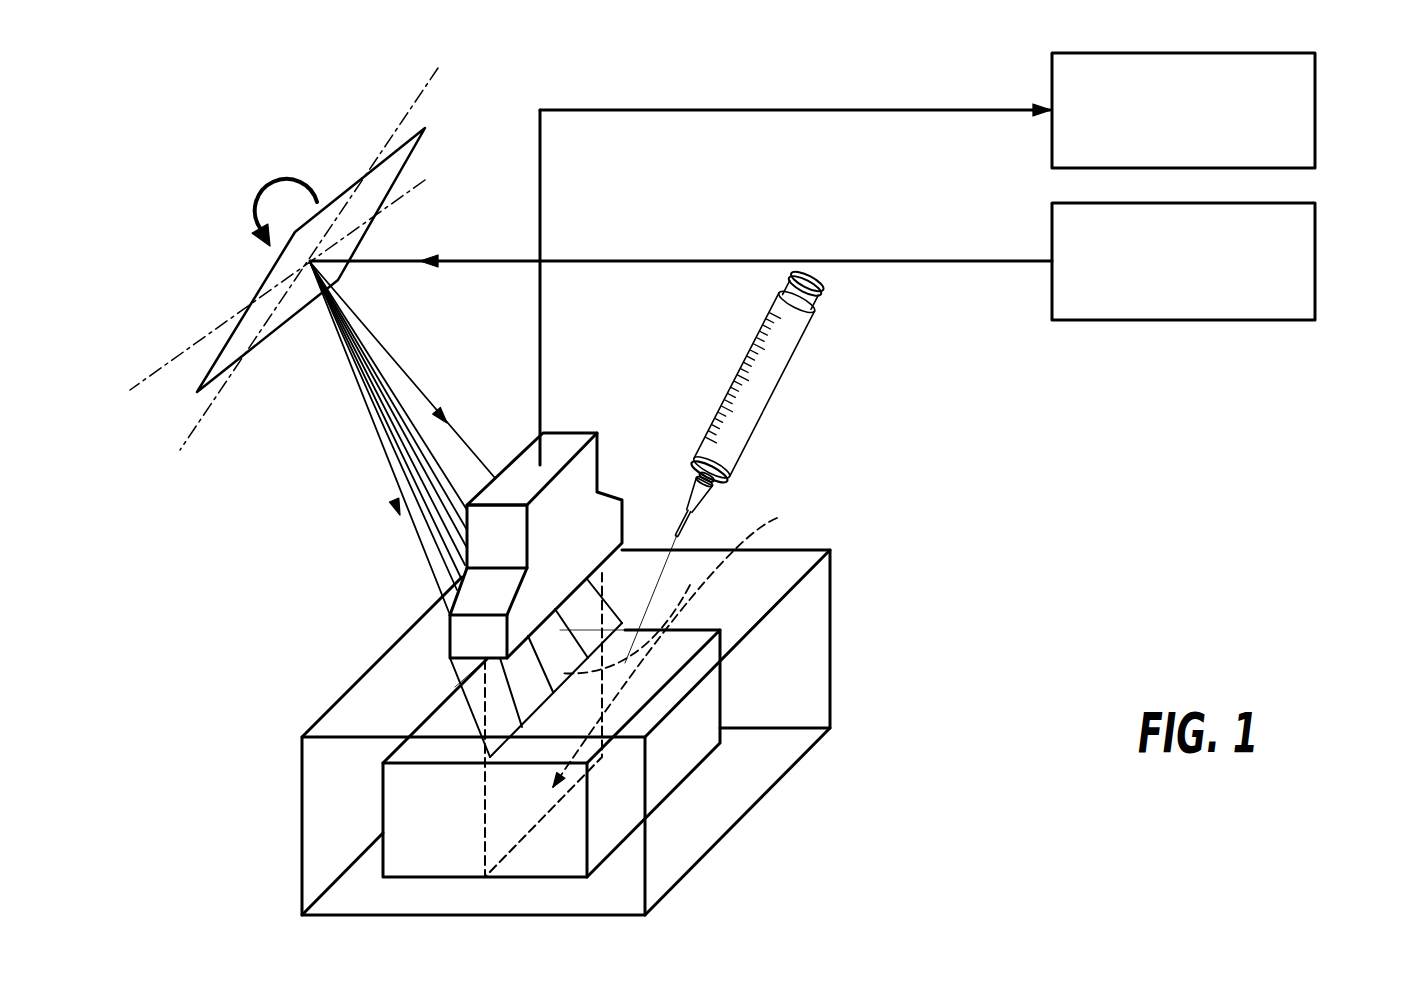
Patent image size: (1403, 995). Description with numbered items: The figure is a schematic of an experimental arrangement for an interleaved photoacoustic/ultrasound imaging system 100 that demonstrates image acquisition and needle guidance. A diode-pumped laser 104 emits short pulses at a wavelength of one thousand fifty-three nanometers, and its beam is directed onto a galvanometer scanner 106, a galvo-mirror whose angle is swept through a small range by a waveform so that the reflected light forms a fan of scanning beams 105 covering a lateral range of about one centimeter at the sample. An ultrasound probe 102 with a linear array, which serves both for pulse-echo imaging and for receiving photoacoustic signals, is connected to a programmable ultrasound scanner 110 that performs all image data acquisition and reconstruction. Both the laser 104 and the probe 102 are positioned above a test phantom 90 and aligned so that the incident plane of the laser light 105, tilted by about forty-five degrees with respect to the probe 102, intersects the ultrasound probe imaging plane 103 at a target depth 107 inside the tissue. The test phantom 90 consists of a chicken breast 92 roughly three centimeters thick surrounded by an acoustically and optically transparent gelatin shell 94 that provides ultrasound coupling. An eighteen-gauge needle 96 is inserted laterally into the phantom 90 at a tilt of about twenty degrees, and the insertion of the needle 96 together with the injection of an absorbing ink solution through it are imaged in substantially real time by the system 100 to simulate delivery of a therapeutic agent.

The interleaved photoacoustic/ultrasound imaging system 100 is at (205, 601).
The programmable ultrasound scanner 110 is at (1317, 108).
The diode-pumped laser 104 is at (1317, 262).
The galvanometer scanner 106 is at (285, 265).
The scanning beams 105 is at (382, 438).
The ultrasound probe 102 is at (604, 512).
The test phantom 90 is at (878, 633).
The chicken breast 92 is at (690, 744).
The gelatin shell 94 is at (773, 757).
The needle 96 is at (790, 365).
The ultrasound probe imaging plane 103 is at (485, 800).
The target depth 107 is at (685, 645).